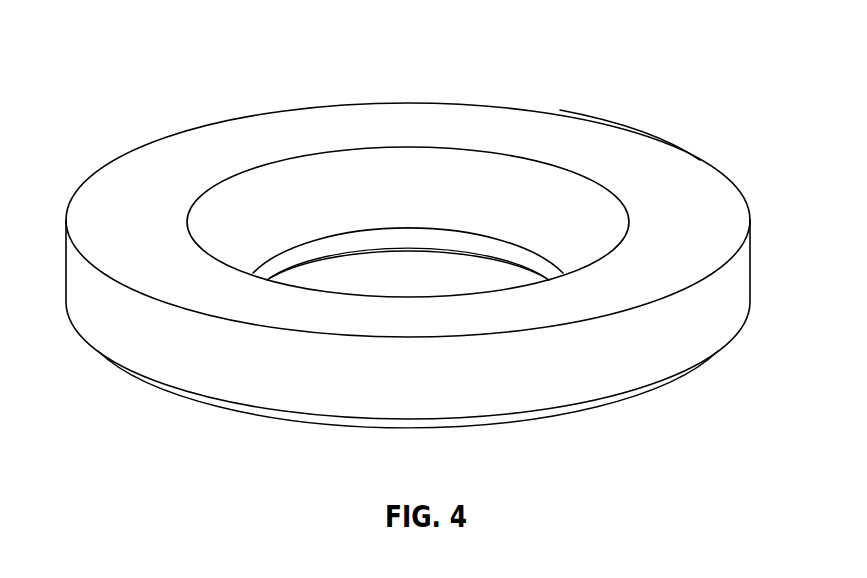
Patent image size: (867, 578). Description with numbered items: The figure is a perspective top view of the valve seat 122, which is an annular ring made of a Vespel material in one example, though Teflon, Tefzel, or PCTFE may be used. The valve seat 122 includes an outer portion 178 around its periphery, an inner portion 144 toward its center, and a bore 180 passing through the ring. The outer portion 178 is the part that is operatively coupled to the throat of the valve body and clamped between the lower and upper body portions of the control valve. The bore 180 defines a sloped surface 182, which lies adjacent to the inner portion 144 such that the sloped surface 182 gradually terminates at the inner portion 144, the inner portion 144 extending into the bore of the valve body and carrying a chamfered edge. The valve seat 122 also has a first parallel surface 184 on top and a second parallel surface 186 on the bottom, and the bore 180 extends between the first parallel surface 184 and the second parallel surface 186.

The valve seat 122 is at (99, 217).
The inner portion 144 is at (353, 246).
The outer portion 178 is at (735, 273).
The bore 180 is at (438, 190).
The sloped surface 182 is at (527, 182).
The first parallel surface 184 is at (645, 148).
The second parallel surface 186 is at (660, 389).